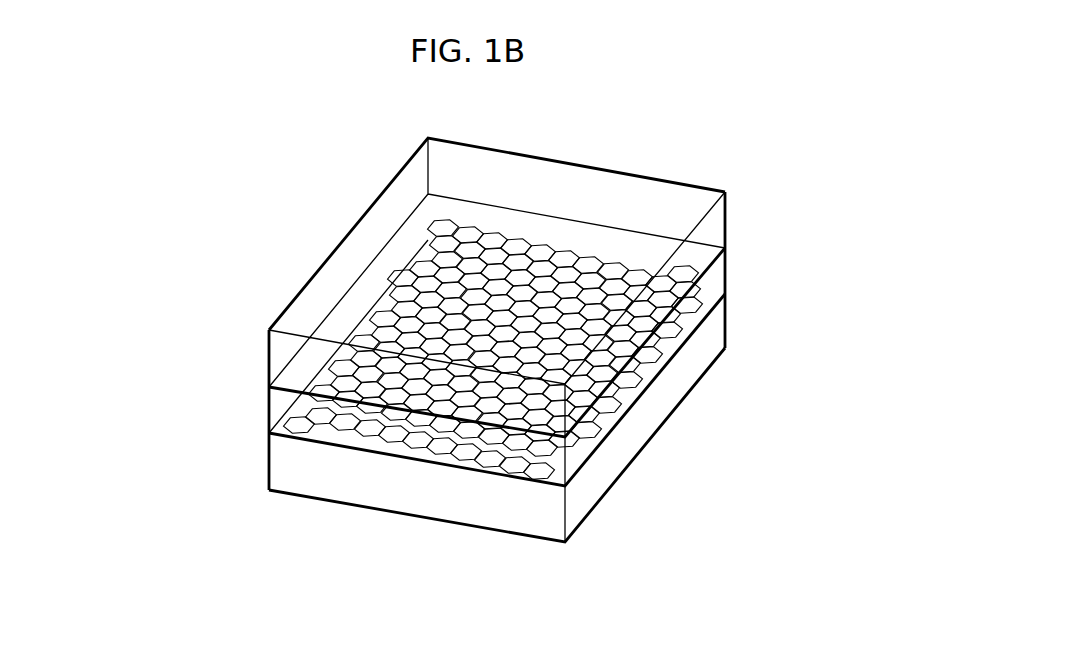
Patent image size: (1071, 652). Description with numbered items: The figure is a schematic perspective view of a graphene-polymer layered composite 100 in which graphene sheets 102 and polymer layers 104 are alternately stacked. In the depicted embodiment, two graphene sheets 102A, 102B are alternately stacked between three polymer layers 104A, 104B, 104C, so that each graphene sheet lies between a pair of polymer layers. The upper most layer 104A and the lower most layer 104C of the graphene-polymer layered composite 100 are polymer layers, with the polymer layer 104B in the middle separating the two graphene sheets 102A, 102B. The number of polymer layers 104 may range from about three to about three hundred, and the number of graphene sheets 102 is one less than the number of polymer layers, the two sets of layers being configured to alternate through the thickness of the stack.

The graphene-polymer layered composite 100 is at (438, 119).
The polymer layers 104 is at (150, 351).
The upper most polymer layer 104A is at (269, 356).
The polymer layer 104B is at (269, 409).
The lower most polymer layer 104C is at (269, 460).
The graphene sheets 102 is at (625, 593).
The graphene sheet 102A is at (558, 425).
The graphene sheet 102B is at (528, 465).